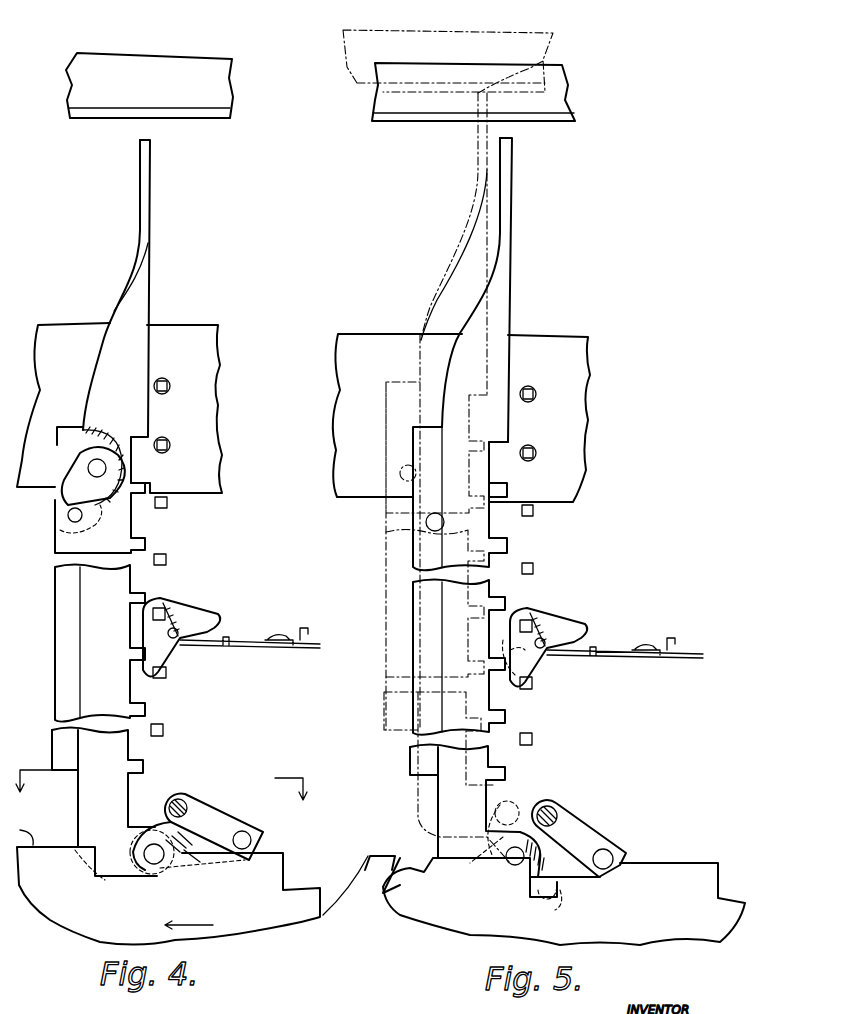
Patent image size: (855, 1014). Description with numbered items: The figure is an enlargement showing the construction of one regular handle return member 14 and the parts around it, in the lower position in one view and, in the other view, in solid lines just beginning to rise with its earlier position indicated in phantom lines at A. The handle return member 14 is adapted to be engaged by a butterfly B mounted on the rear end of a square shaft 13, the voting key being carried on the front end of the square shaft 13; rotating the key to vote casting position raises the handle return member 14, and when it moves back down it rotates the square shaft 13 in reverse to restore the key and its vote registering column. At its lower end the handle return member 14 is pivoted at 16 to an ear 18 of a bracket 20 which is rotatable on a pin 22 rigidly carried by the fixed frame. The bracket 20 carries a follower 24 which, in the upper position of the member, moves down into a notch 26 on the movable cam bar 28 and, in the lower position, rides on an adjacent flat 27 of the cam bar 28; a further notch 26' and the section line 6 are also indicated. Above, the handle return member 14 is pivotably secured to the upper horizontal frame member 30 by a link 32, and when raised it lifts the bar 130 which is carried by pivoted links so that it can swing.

In FIG. 4, the bar 130 is at (177, 72).
In FIG. 5, the bar 130 is at (563, 108).
In FIG. 5, the phantom position of blade A is at (545, 65).
In FIG. 4, the handle return member 14 is at (90, 633).
In FIG. 5, the handle return member 14 is at (505, 303).
In FIG. 4, the upper horizontal frame member 30 is at (205, 412).
In FIG. 5, the upper horizontal frame member 30 is at (578, 427).
In FIG. 4, the link 32 is at (77, 483).
In FIG. 4, the square shaft 13 is at (166, 508).
In FIG. 5, the square shaft 13 is at (533, 620).
In FIG. 4, the butterfly B is at (190, 605).
In FIG. 5, the butterfly B is at (565, 612).
In FIG. 4, the pin 22 is at (181, 804).
In FIG. 5, the pin 22 is at (554, 812).
In FIG. 4, the bracket 20 is at (212, 815).
In FIG. 5, the bracket 20 is at (590, 835).
In FIG. 4, the follower 24 is at (246, 836).
In FIG. 5, the follower 24 is at (610, 858).
In FIG. 4, the ear 18 is at (158, 815).
In FIG. 5, the ear 18 is at (525, 820).
In FIG. 4, the pivot 16 is at (163, 866).
In FIG. 5, the pivot 16 is at (500, 815).
In FIG. 4, the movable cam bar 28 is at (272, 920).
In FIG. 5, the movable cam bar 28 is at (455, 928).
In FIG. 4, the notch 26 is at (160, 889).
In FIG. 5, the notch 26 is at (552, 869).
In FIG. 4, the support surface 26' is at (359, 905).
In FIG. 4, the flat 27 is at (296, 845).
In FIG. 5, the flat 27 is at (688, 857).
In FIG. 4, the section line 6 is at (159, 798).